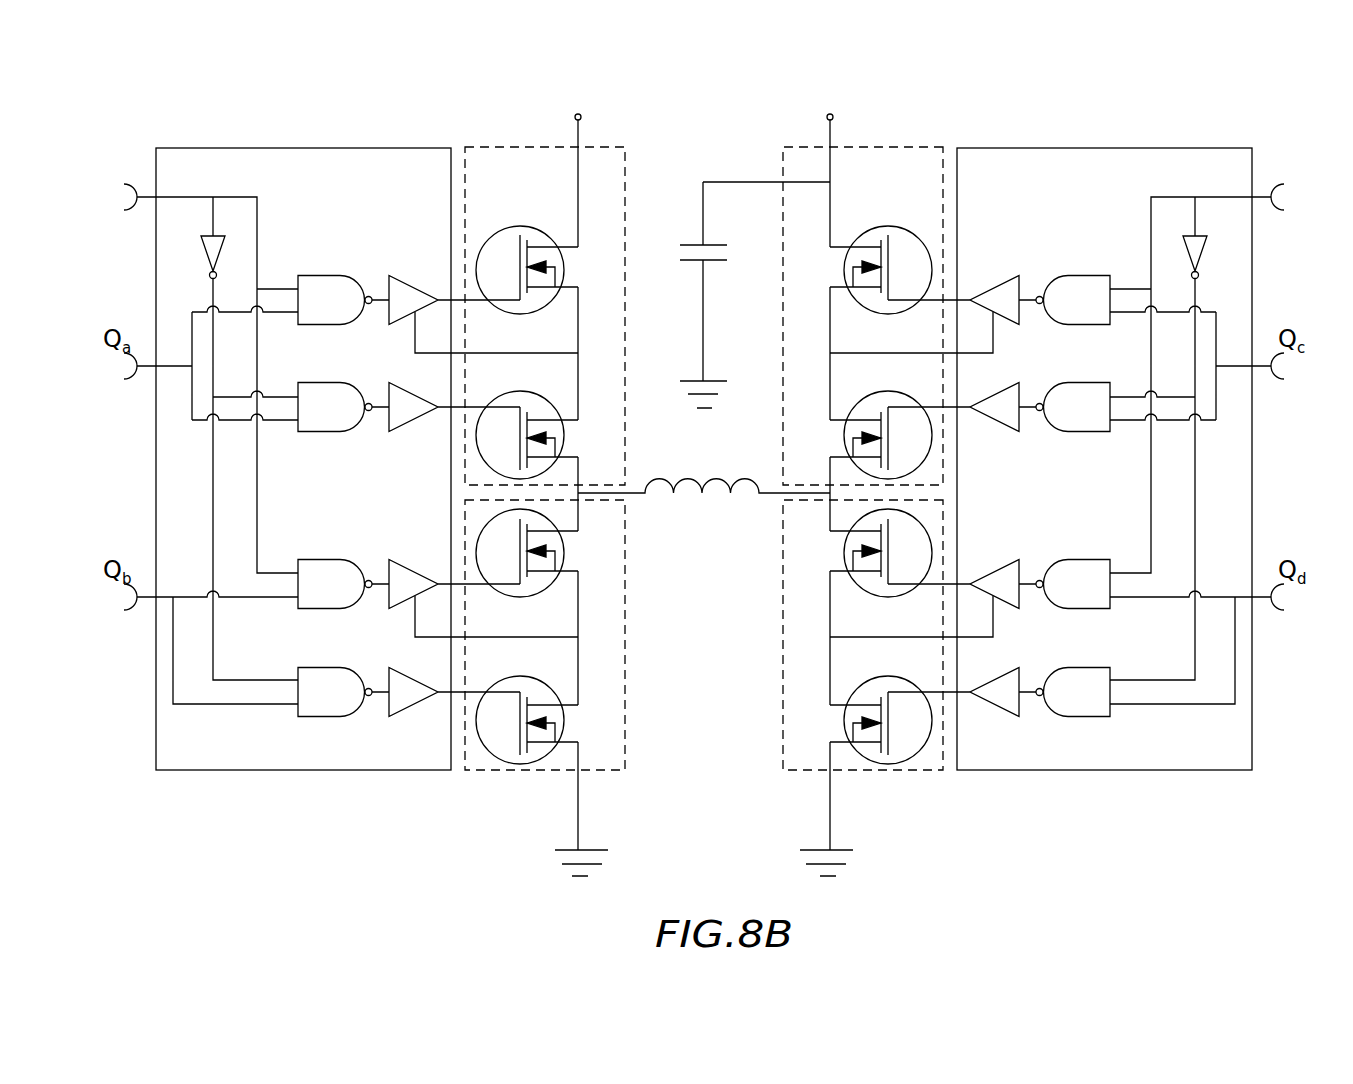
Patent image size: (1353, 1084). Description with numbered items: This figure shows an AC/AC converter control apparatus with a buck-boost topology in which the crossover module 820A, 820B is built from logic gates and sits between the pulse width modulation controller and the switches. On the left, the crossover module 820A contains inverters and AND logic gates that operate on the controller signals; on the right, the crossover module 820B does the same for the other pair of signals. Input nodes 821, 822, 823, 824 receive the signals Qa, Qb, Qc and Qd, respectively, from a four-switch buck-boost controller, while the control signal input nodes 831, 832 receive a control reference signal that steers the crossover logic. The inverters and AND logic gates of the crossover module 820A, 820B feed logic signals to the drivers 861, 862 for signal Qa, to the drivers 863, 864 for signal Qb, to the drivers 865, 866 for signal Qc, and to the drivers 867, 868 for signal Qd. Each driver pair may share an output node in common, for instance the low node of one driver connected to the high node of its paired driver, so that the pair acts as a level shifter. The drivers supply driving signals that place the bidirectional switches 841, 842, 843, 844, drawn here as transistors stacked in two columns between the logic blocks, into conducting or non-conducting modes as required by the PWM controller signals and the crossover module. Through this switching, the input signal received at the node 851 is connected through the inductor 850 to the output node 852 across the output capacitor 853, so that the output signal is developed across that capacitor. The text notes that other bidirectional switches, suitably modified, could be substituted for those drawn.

The crossover module 820A is at (302, 148).
The crossover module 820B is at (1104, 148).
The input node 821 is at (150, 370).
The input node 822 is at (150, 600).
The input node 823 is at (1260, 368).
The input node 824 is at (1265, 600).
The control signal input node 831 is at (147, 195).
The control signal input node 832 is at (1260, 194).
The bidirectional switch 841 is at (546, 146).
The bidirectional switch 842 is at (514, 772).
The bidirectional switch 843 is at (862, 146).
The bidirectional switch 844 is at (877, 772).
The inductor 850 is at (687, 478).
The input node 851 is at (578, 165).
The output node 852 is at (835, 165).
The output capacitor 853 is at (702, 215).
The driver 861 is at (417, 285).
The driver 862 is at (418, 420).
The driver 863 is at (420, 575).
The driver 864 is at (416, 703).
The driver 865 is at (995, 285).
The driver 866 is at (993, 420).
The driver 867 is at (995, 575).
The driver 868 is at (993, 705).